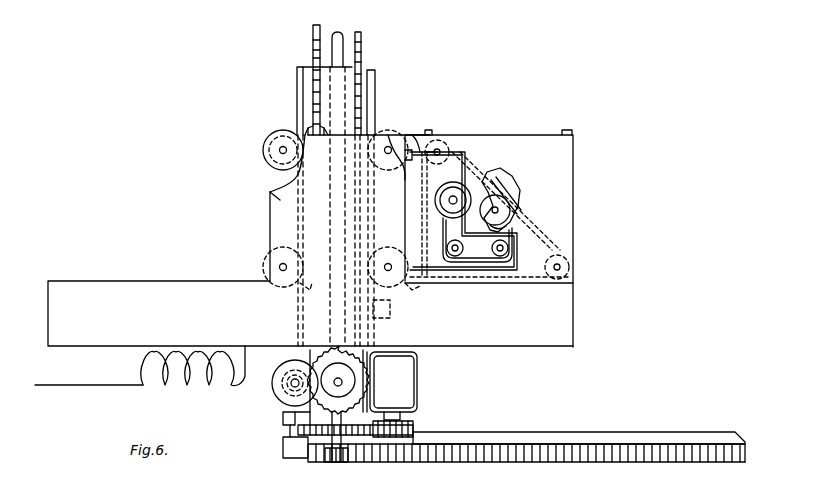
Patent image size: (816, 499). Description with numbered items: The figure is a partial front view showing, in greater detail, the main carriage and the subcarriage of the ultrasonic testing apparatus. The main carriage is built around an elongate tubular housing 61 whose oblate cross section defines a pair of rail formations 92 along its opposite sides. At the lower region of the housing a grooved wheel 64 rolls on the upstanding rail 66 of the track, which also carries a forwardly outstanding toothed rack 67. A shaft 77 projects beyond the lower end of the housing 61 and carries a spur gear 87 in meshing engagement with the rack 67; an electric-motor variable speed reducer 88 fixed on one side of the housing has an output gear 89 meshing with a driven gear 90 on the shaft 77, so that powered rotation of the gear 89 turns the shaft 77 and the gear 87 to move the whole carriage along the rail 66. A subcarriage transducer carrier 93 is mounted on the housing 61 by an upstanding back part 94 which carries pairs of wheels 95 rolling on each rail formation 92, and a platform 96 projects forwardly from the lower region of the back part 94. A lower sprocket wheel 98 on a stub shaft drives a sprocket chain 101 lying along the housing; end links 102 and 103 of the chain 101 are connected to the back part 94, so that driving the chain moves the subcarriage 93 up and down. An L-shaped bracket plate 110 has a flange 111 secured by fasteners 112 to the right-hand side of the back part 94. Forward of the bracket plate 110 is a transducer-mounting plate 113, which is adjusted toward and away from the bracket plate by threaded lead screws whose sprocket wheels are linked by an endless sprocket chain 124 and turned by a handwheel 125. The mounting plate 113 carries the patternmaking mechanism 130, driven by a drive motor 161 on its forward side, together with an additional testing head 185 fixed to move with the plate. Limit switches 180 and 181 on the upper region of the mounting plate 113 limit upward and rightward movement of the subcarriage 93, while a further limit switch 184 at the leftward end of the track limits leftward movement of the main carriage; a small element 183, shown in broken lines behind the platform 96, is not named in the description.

The tubular housing 61 is at (310, 66).
The grooved wheel 64 is at (298, 422).
The upstanding rail 66 is at (656, 432).
The toothed rack 67 is at (586, 458).
The shaft 77 is at (339, 33).
The spur gear 87 is at (342, 464).
The electric-motor variable speed reducer 88 is at (410, 389).
The output gear 89 is at (414, 426).
The driven gear 90 is at (296, 440).
The rail formations 92 is at (296, 72).
The subcarriage transducer carrier 93 is at (266, 217).
The back part 94 is at (266, 192).
The wheels 95 is at (264, 148).
The platform 96 is at (118, 282).
The sprocket wheel 98 is at (312, 370).
The sprocket chain 101 is at (361, 50).
The end link 102 is at (308, 128).
The end link 103 is at (300, 292).
The bracket plate 110 is at (416, 135).
The flange 111 is at (400, 135).
The fasteners 112 is at (406, 176).
The transducer-mounting plate 113 is at (563, 163).
The endless sprocket chain 124 is at (478, 266).
The handwheel 125 is at (465, 182).
The patternmaking mechanism 130 is at (505, 182).
The drive motor 161 is at (504, 216).
The limit switch 180 is at (428, 130).
The limit switch 181 is at (570, 130).
The block 183 is at (392, 312).
The limit switch 184 is at (284, 414).
The testing head 185 is at (422, 290).